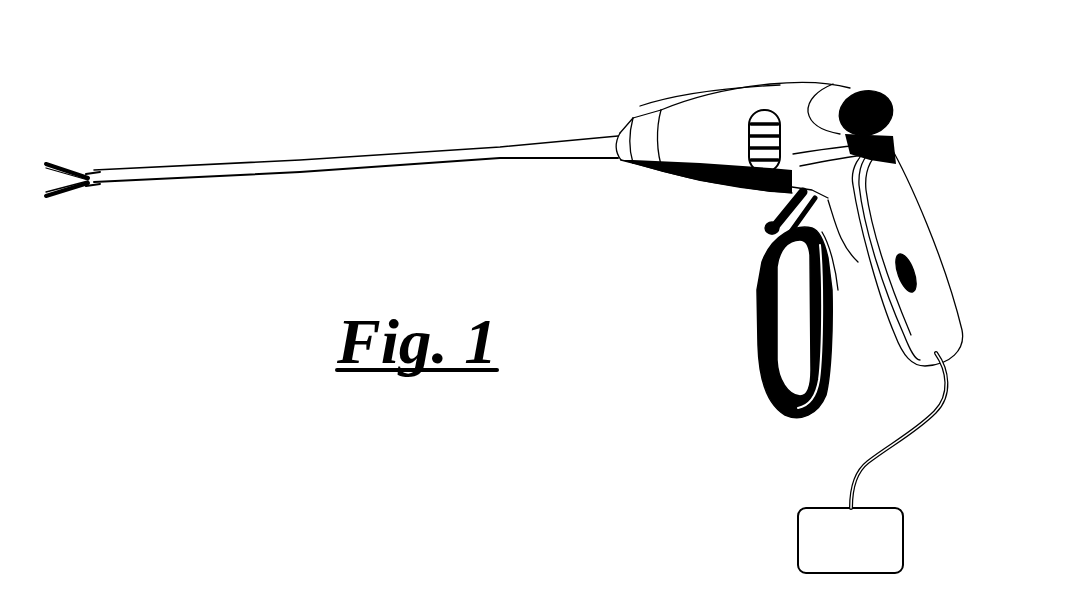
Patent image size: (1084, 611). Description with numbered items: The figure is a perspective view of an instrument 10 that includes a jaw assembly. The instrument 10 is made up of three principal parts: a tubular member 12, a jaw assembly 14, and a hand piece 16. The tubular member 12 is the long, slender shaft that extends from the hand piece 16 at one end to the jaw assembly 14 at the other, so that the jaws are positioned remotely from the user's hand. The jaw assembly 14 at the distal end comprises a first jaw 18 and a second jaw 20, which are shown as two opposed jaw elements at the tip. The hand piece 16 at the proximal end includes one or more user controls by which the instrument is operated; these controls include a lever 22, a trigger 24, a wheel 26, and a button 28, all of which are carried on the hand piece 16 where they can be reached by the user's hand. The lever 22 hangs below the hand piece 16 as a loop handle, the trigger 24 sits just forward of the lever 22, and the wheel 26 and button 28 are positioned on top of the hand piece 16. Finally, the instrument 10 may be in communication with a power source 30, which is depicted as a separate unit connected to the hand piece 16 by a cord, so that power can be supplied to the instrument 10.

The instrument 10 is at (372, 78).
The tubular member 12 is at (430, 155).
The jaw assembly 14 is at (121, 132).
The hand piece 16 is at (710, 64).
The first jaw 18 is at (68, 148).
The second jaw 20 is at (68, 208).
The lever 22 is at (778, 328).
The trigger 24 is at (783, 205).
The wheel 26 is at (765, 110).
The button 28 is at (878, 104).
The power source 30 is at (868, 560).